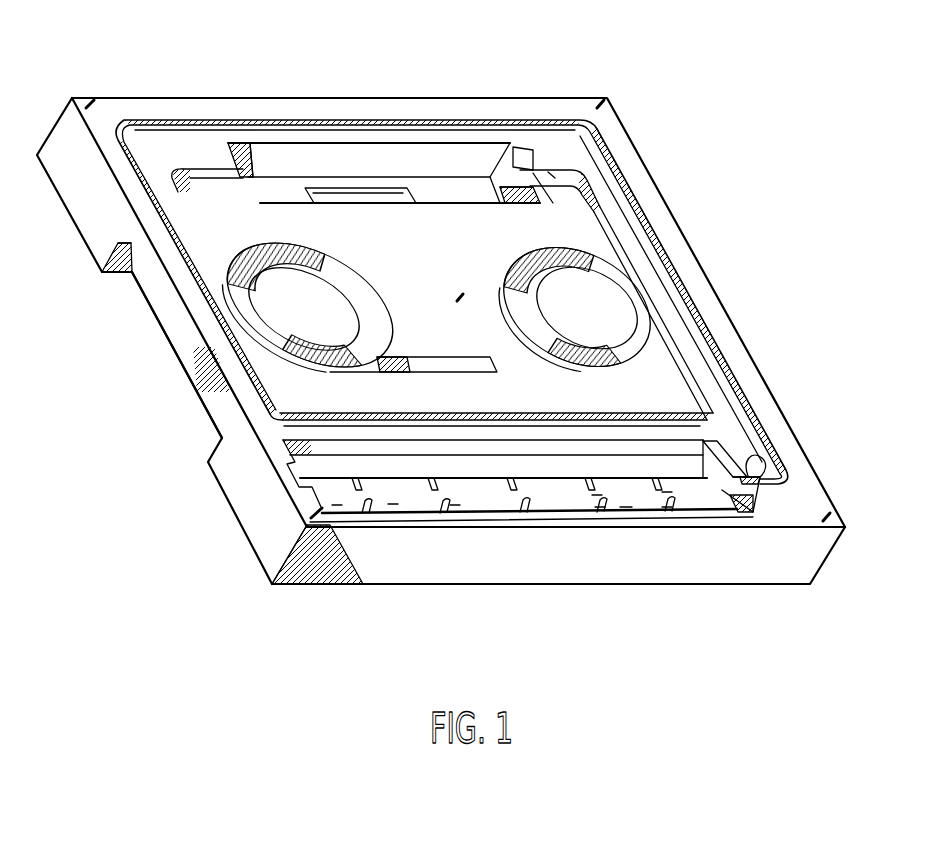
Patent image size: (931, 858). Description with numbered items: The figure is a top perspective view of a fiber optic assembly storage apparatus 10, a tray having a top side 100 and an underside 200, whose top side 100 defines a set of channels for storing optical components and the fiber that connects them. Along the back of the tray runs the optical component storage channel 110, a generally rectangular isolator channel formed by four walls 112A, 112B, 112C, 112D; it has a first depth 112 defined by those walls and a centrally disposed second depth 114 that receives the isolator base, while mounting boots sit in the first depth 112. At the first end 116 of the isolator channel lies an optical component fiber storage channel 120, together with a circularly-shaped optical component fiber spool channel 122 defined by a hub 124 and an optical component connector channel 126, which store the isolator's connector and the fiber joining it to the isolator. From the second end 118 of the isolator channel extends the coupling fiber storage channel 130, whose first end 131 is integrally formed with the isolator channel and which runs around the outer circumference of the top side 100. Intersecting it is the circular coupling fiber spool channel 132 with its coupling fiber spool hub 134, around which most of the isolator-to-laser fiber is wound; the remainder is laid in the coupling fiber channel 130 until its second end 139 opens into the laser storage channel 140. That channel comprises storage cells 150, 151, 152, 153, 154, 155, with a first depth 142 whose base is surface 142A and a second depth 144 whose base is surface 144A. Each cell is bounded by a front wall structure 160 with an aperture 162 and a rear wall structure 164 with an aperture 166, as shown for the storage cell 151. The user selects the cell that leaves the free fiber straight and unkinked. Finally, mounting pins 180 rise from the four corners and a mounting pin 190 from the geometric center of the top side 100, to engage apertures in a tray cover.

The fiber optic assembly storage apparatus 10 is at (757, 49).
The top side 100 is at (648, 177).
The optical component storage channel 110 is at (337, 152).
The first depth 112 is at (423, 160).
The wall 112A is at (274, 153).
The wall 112B is at (519, 157).
The wall 112C is at (485, 207).
The wall 112D is at (248, 194).
The second depth 114 is at (370, 186).
The first end 116 is at (240, 174).
The second end 118 is at (548, 171).
The optical component fiber storage channel 120 is at (192, 218).
The optical component fiber spool channel 122 is at (215, 313).
The hub 124 is at (313, 312).
The optical component connector channel 126 is at (470, 355).
The coupling fiber storage channel 130 is at (197, 120).
The first end 131 is at (618, 140).
The coupling fiber spool channel 132 is at (652, 340).
The coupling fiber spool hub 134 is at (597, 313).
The second end 139 is at (748, 468).
The optical component storage cells 140 is at (472, 505).
The first depth 142 is at (295, 470).
The surface 142A is at (393, 463).
The second depth 144 is at (483, 508).
The surface 144A is at (577, 510).
The storage cell 150 is at (695, 506).
The storage cell 151 is at (625, 507).
The storage cell 152 is at (540, 508).
The storage cell 153 is at (455, 505).
The storage cell 154 is at (393, 504).
The storage cell 155 is at (337, 505).
The front wall structure 160 is at (667, 507).
The aperture 162 is at (674, 490).
The rear wall structure 164 is at (600, 507).
The aperture 166 is at (600, 490).
The mounting pins 180 is at (88, 103).
The mounting pin 190 is at (458, 297).
The underside 200 is at (192, 400).